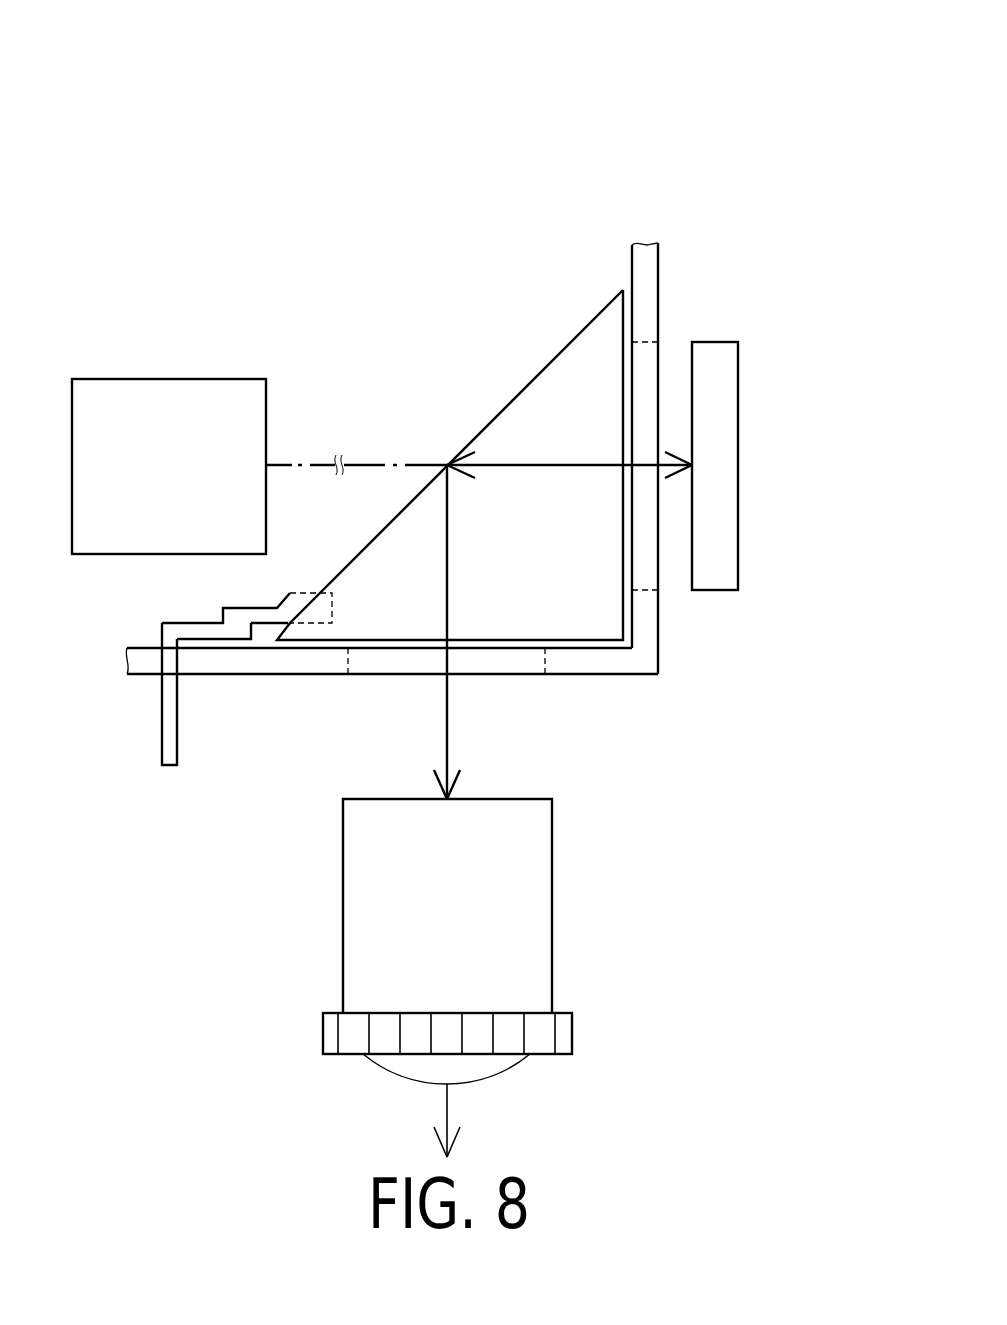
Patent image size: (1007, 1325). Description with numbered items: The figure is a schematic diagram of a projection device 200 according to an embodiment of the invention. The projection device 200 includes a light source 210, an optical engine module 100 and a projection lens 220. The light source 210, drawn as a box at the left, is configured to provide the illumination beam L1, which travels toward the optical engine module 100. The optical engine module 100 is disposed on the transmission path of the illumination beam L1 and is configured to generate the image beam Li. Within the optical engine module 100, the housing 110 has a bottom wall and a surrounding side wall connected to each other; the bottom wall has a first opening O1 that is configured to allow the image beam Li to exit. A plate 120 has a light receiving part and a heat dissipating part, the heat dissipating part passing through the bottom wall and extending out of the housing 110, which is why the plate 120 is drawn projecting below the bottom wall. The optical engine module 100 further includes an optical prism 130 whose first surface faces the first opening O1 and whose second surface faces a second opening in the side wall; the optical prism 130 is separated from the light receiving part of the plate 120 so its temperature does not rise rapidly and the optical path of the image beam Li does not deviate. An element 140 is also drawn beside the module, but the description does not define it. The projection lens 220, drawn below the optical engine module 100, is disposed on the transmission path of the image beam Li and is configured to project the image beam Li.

The projection device 200 is at (100, 40).
The optical engine module 100 is at (417, 359).
The housing 110 is at (145, 658).
The plate 120 is at (168, 723).
The optical prism 130 is at (593, 360).
The optical element 140 is at (721, 474).
The light source 210 is at (174, 403).
The projection lens 220 is at (515, 912).
The illumination beam L1 is at (373, 463).
The image beam Li is at (448, 712).
The first opening O1 is at (348, 675).